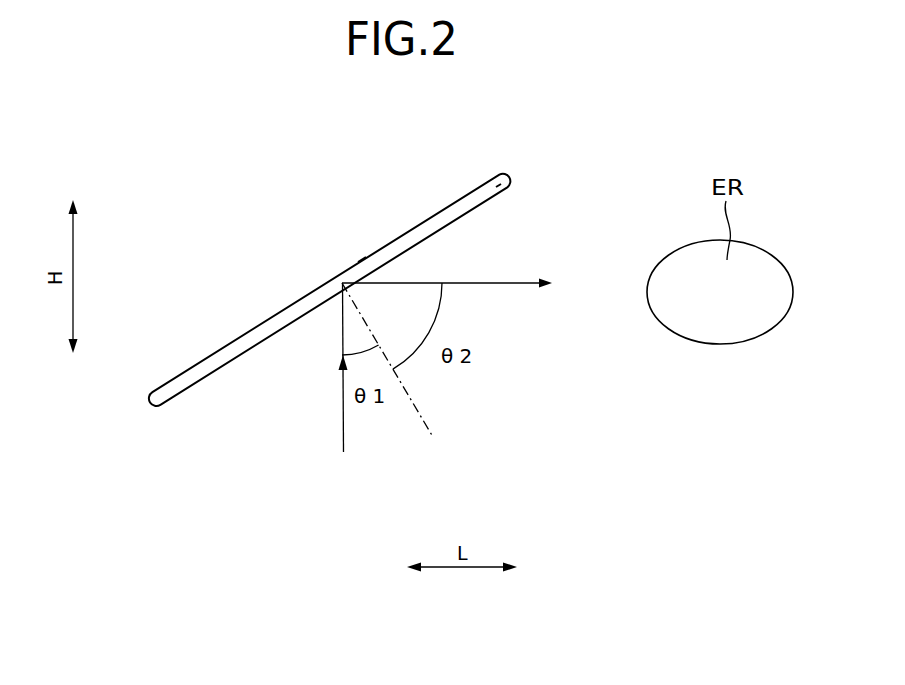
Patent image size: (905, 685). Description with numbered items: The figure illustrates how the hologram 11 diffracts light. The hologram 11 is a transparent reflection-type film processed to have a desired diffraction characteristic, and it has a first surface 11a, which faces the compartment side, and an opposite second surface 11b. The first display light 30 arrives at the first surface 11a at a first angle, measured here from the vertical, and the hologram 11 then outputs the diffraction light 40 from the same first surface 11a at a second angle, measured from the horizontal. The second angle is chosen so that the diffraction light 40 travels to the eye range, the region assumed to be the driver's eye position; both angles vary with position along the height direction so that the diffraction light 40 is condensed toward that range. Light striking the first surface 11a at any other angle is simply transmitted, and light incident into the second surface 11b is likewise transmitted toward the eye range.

The hologram 11 is at (442, 166).
The first surface 11a is at (501, 199).
The second surface 11b is at (362, 261).
The first display light 30 is at (346, 437).
The diffraction light 40 is at (525, 290).